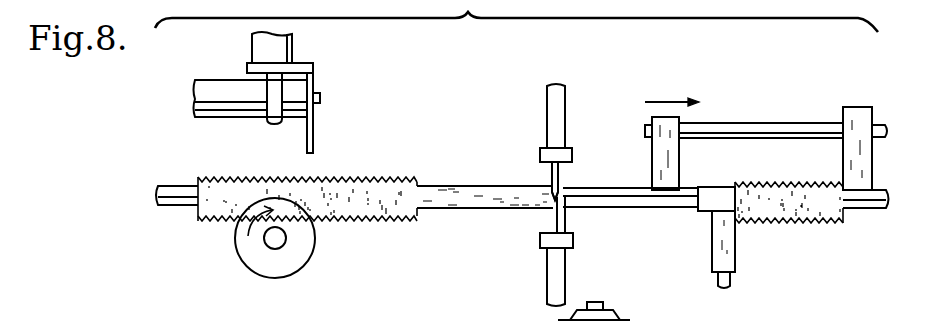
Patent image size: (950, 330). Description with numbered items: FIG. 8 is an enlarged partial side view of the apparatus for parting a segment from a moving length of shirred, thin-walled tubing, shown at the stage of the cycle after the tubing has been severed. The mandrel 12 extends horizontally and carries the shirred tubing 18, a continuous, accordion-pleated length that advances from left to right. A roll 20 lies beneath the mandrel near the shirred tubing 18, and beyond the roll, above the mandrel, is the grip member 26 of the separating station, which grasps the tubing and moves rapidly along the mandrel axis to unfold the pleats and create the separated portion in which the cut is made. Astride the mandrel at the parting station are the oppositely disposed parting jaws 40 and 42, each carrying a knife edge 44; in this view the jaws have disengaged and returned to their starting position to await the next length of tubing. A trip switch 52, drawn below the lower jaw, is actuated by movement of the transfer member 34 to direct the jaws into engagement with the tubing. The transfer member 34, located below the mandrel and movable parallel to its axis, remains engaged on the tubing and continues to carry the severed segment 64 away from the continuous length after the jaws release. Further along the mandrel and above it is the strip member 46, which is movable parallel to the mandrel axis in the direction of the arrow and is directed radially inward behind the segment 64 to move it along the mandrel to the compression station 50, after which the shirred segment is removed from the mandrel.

The mandrel 12 is at (868, 208).
The shirred tubing 18 is at (250, 176).
The roll 20 is at (295, 262).
The grip member 26 is at (308, 150).
The transfer member 34 is at (723, 256).
The parting jaw 40 is at (548, 167).
The parting jaw 42 is at (555, 220).
The knife edge 44 is at (566, 192).
The strip member 46 is at (652, 162).
The compression station 50 is at (860, 107).
The trip switch 52 is at (595, 302).
The severed segment 64 is at (783, 182).